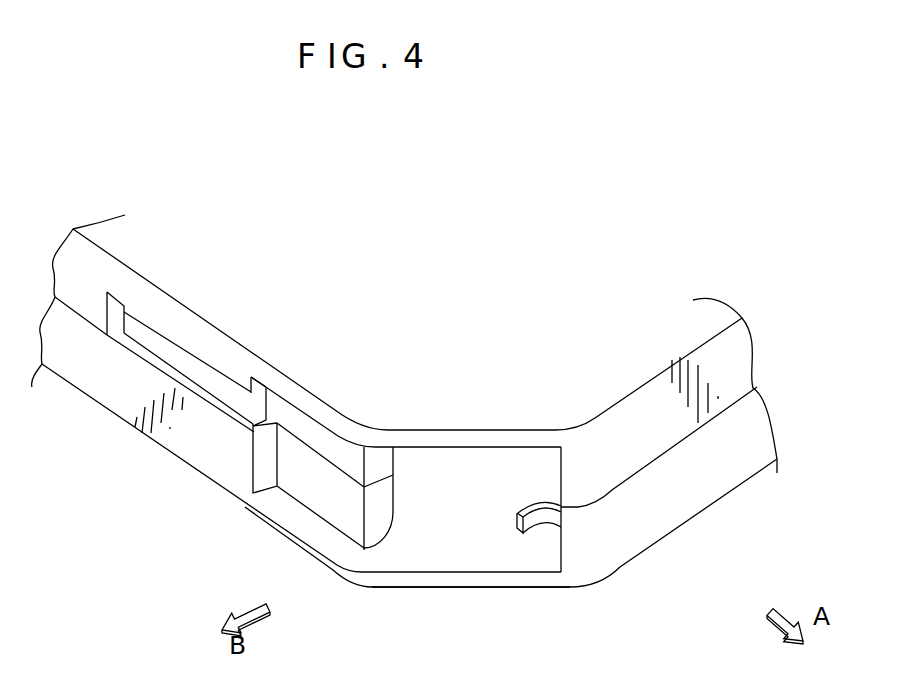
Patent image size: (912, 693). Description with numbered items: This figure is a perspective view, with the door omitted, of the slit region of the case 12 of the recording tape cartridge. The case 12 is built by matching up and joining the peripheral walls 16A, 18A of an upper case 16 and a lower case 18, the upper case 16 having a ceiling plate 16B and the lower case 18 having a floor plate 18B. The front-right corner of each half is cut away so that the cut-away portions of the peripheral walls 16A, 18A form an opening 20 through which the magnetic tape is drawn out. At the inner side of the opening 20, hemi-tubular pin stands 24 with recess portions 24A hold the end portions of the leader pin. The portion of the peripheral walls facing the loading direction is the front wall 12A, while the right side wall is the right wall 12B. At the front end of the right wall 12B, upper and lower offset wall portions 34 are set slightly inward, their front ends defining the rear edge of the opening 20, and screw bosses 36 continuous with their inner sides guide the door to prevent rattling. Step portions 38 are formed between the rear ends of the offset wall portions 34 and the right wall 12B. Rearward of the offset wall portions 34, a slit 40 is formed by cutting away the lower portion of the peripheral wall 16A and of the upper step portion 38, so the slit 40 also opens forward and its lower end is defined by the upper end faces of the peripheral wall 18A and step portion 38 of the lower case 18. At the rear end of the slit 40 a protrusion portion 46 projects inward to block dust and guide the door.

The case 12 is at (687, 587).
The front wall 12A is at (778, 500).
The right wall 12B is at (145, 472).
The upper case 16 is at (620, 495).
The peripheral wall 16A is at (88, 310).
The ceiling plate 16B is at (478, 418).
The lower case 18 is at (618, 574).
The peripheral wall 18A is at (113, 397).
The floor plate 18B is at (410, 553).
The opening 20 is at (478, 514).
The pin stand 24 is at (540, 508).
The recess portion 24A is at (553, 502).
The offset wall portion 34 is at (330, 490).
The screw boss 36 is at (387, 503).
The step portion 38 is at (258, 382).
The slit 40 is at (190, 360).
The protrusion portion 46 is at (115, 315).